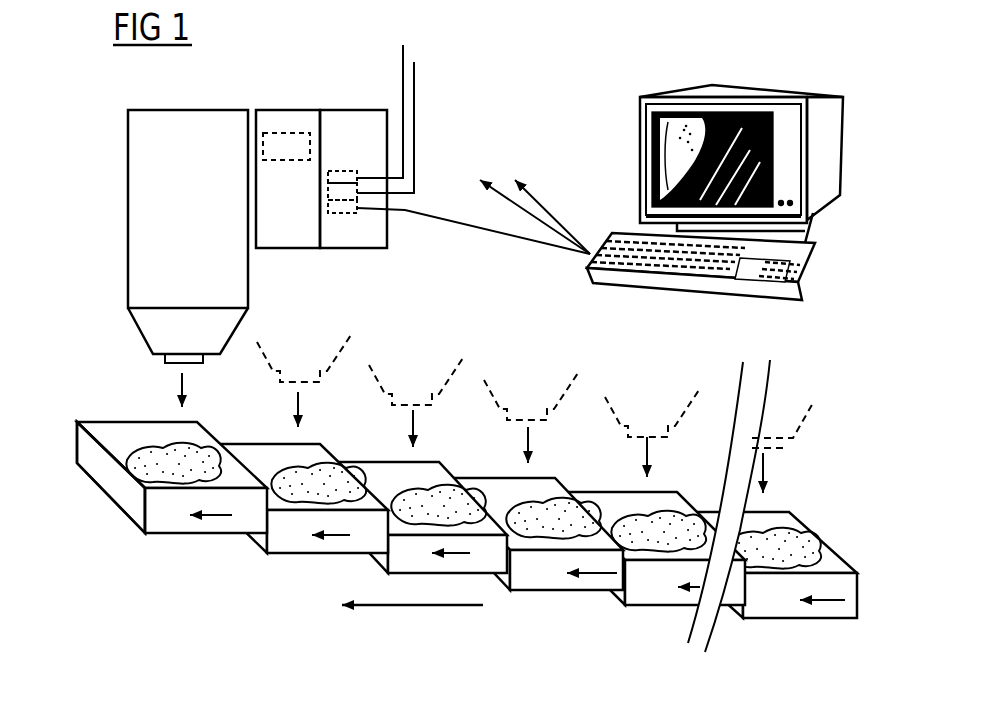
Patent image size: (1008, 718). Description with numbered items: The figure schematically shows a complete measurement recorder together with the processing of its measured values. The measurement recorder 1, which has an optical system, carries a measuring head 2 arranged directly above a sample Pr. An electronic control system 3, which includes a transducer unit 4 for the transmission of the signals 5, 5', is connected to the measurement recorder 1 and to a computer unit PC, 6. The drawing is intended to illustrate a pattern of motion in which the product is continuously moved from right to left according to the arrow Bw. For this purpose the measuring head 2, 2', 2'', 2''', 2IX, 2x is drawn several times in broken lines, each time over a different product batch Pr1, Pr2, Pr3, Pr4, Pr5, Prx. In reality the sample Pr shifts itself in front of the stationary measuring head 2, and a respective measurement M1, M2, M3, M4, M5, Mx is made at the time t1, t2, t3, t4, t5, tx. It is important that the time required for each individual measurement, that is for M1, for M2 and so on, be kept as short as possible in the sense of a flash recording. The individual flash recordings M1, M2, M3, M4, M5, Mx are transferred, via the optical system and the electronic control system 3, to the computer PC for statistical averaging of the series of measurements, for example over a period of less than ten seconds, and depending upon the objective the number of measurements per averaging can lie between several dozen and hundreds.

The measurement recorder 1 is at (200, 252).
The measuring head 2 is at (232, 363).
The measuring head 2' is at (316, 369).
The measuring head 2'' is at (438, 392).
The measuring head 2''' is at (555, 405).
The measuring head 2IX is at (689, 402).
The measuring head 2x is at (803, 421).
The electronic control system 3 is at (282, 110).
The transducer unit 4 is at (350, 110).
The signal 5 is at (405, 112).
The signal 5' is at (381, 95).
The computer unit 6 is at (770, 95).
The computer PC is at (832, 178).
The sample Pr is at (102, 481).
The product batch Pr1 is at (172, 477).
The product batch Pr2 is at (293, 498).
The product batch Pr3 is at (413, 517).
The product batch Pr4 is at (532, 534).
The product batch Pr5 is at (651, 548).
The product batch Prx is at (766, 565).
The time t1 is at (192, 519).
The time t2 is at (312, 539).
The time t3 is at (432, 559).
The time t4 is at (566, 576).
The time t5 is at (666, 591).
The time tx is at (797, 605).
The measurement M1 is at (206, 400).
The measurement M2 is at (322, 418).
The measurement M3 is at (437, 437).
The measurement M4 is at (552, 454).
The measurement M5 is at (671, 466).
The measurement Mx is at (787, 482).
The arrow Bw is at (412, 626).